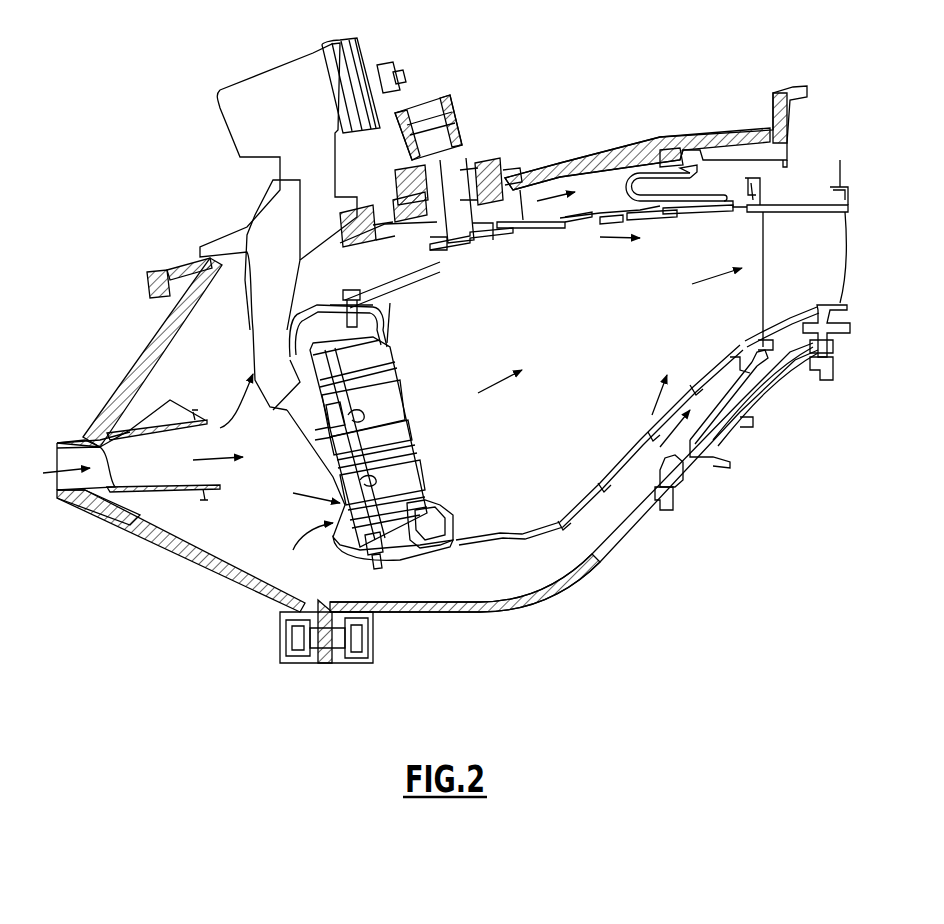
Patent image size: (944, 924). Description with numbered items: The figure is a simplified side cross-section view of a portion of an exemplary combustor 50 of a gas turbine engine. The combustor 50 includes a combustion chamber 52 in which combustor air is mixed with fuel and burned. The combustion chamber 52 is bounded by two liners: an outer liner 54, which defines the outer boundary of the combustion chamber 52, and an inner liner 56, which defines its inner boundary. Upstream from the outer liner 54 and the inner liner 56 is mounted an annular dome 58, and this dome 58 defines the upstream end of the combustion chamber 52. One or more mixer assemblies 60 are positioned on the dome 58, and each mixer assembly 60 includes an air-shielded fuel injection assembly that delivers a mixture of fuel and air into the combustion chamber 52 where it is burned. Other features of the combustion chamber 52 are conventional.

The combustor 50 is at (569, 101).
The combustion chamber 52 is at (600, 346).
The outer liner 54 is at (517, 182).
The inner liner 56 is at (602, 478).
The annular dome 58 is at (457, 527).
The mixer assembly 60 is at (433, 403).